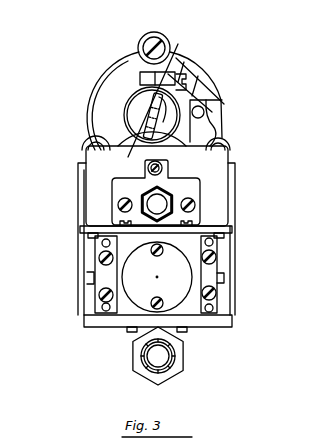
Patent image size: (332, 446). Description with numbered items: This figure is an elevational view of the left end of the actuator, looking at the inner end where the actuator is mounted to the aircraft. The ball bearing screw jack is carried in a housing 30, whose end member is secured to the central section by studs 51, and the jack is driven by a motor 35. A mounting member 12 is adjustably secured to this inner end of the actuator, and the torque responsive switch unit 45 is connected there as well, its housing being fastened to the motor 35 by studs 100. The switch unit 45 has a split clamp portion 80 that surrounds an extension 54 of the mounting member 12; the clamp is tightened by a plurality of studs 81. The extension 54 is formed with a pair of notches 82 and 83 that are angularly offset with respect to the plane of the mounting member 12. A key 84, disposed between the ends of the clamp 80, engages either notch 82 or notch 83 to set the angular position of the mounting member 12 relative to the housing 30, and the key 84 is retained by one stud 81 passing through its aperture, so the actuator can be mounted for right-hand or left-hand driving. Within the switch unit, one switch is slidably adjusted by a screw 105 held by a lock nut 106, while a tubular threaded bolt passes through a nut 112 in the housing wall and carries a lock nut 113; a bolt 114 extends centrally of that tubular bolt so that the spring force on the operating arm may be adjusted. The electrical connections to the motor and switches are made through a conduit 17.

The housing 30 is at (73, 129).
The stud 51 is at (144, 41).
The extension 54 is at (208, 90).
The split clamp portion 80 is at (200, 92).
The stud 81 is at (186, 74).
The notch 82 is at (148, 104).
The notch 83 is at (168, 115).
The key 84 is at (160, 92).
The mounting member 12 is at (134, 149).
The torque responsive switch unit 45 is at (217, 188).
The lock nut 106 is at (160, 167).
The screw 105 is at (166, 184).
The lock nut 113 is at (146, 196).
The bolt 114 is at (162, 205).
The stud 100 is at (110, 223).
The motor 35 is at (140, 292).
The nut 112 is at (168, 229).
The conduit 17 is at (204, 356).